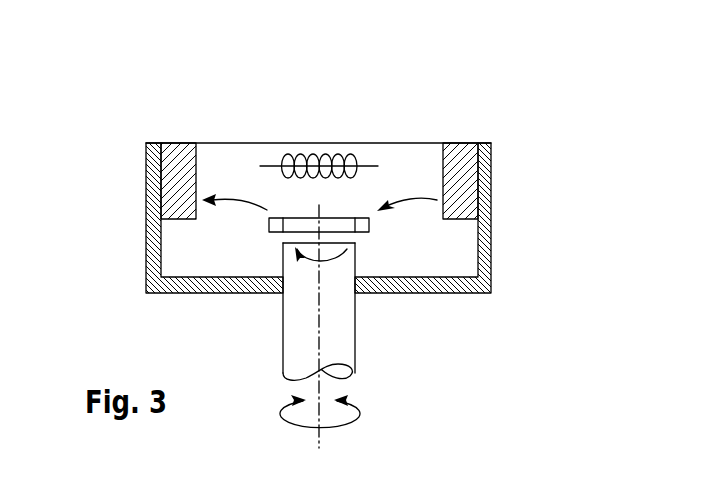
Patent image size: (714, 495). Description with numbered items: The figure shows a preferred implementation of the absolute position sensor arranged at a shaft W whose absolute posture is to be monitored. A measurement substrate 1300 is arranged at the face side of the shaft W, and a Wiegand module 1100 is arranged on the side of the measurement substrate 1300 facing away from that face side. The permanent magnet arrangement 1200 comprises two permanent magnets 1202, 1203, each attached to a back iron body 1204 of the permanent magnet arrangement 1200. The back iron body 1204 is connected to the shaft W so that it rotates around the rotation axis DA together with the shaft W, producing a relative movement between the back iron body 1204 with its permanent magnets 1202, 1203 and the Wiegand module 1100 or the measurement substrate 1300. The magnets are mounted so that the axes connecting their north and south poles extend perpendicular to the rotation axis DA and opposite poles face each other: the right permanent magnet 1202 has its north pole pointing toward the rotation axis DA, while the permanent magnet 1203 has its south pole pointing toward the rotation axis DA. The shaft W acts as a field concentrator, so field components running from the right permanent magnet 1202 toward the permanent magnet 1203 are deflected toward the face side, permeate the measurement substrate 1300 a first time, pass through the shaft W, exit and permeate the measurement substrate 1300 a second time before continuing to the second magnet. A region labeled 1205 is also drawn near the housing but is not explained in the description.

The Wiegand module 1100 is at (334, 114).
The permanent magnet arrangement 1200 is at (540, 175).
The right permanent magnet 1202 is at (463, 143).
The permanent magnet 1203 is at (177, 143).
The back iron body 1204 is at (491, 257).
The recess / opening in housing 1205 is at (286, 243).
The measurement substrate 1300 is at (387, 238).
The shaft W is at (374, 352).
The rotation axis DA is at (320, 412).